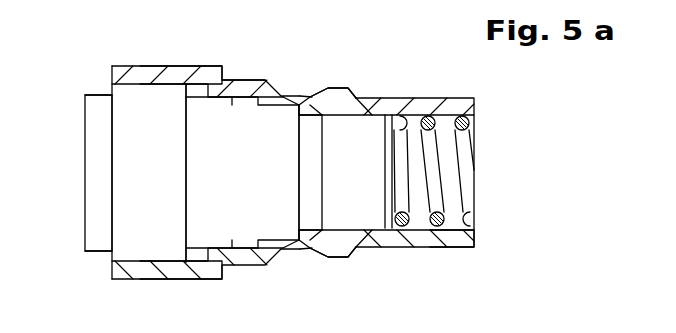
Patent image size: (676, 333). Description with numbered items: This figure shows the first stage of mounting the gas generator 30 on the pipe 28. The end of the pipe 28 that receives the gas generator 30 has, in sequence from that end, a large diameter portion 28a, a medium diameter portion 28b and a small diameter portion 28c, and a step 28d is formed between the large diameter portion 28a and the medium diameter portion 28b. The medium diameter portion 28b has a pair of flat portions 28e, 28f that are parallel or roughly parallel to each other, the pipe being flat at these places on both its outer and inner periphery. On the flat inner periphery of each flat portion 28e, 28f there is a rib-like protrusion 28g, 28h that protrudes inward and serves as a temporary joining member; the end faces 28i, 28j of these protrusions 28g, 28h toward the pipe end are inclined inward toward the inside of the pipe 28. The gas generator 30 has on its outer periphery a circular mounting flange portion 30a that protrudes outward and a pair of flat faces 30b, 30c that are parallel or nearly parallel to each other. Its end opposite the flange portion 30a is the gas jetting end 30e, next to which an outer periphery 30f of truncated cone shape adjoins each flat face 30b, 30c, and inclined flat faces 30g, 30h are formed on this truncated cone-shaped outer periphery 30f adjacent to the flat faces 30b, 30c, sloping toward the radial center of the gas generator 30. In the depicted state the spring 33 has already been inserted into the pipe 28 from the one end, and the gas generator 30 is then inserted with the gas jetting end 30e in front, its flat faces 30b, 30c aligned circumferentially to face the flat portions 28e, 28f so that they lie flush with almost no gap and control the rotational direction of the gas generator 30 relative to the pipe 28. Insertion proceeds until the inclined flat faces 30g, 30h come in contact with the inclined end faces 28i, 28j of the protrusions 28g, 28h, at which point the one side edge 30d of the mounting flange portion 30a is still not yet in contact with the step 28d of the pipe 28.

The pipe 28 is at (400, 92).
The large diameter portion 28a is at (153, 76).
The medium diameter portion 28b is at (243, 83).
The small diameter portion 28c is at (445, 240).
The step 28d is at (222, 264).
The flat portion 28e is at (313, 96).
The flat portion 28f is at (303, 250).
The rib-like protrusion 28g is at (312, 118).
The rib-like protrusion 28h is at (310, 229).
The inclined end face 28i is at (297, 118).
The inclined end face 28j is at (302, 236).
The gas generator 30 is at (102, 221).
The mounting flange portion 30a is at (155, 246).
The flat face 30b is at (286, 97).
The flat face 30c is at (283, 251).
The side edge 30d is at (187, 160).
The gas jetting end 30e is at (405, 190).
The truncated cone-shaped outer periphery 30f is at (304, 166).
The inclined flat face 30g is at (328, 90).
The inclined flat face 30h is at (326, 244).
The spring 33 is at (476, 124).